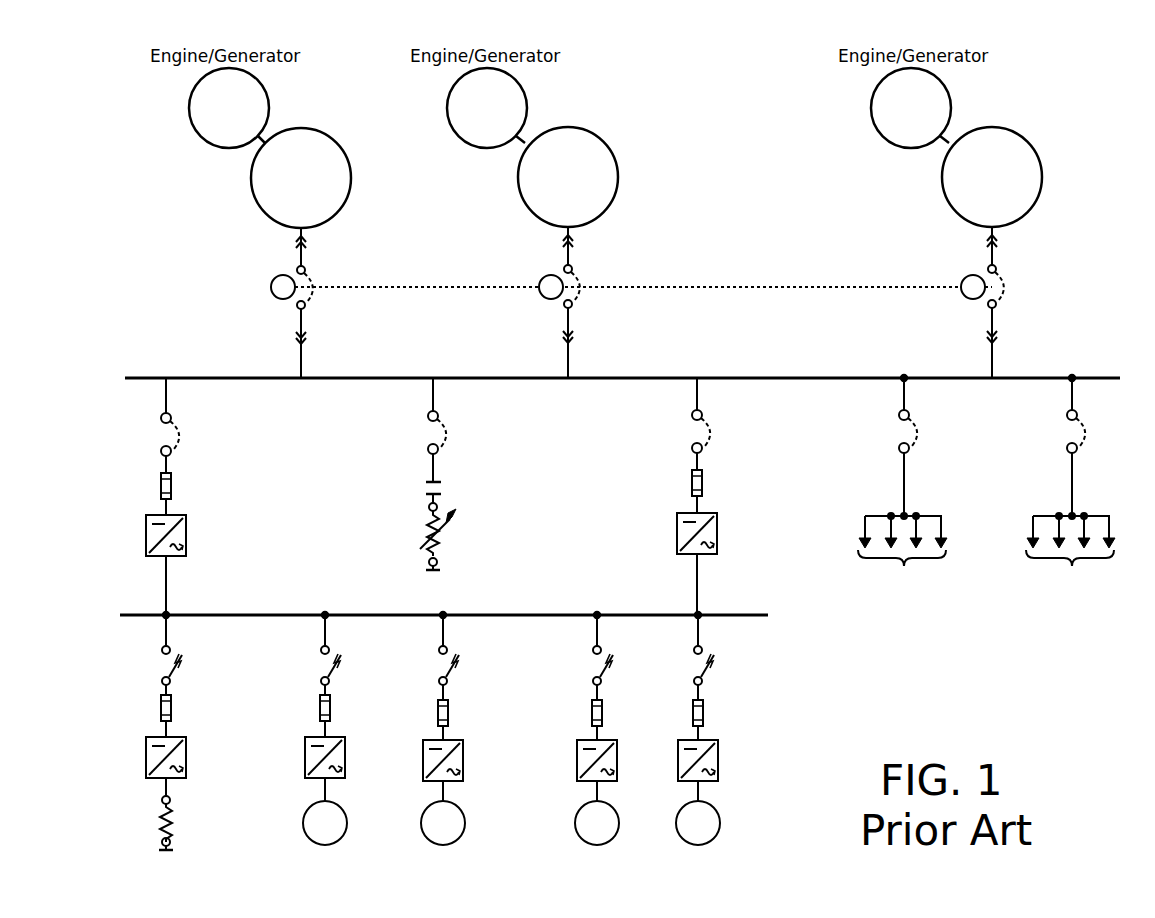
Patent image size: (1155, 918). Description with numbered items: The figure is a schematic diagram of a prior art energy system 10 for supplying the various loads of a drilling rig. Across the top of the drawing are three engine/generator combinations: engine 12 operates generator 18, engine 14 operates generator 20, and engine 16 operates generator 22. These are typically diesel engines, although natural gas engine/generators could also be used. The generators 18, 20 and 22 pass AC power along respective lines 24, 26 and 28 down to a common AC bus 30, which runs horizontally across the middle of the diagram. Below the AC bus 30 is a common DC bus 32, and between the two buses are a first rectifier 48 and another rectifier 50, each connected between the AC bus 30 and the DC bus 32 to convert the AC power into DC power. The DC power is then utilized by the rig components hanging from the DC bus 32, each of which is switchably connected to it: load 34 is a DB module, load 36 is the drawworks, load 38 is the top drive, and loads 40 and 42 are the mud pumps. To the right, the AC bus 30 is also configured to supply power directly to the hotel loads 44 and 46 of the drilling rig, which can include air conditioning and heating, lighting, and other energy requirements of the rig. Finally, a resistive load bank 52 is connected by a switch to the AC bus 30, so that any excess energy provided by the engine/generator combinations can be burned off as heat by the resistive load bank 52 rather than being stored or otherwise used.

The energy system 10 is at (818, 680).
The engine 12 is at (217, 147).
The engine 14 is at (478, 148).
The engine 16 is at (888, 146).
The generator 18 is at (338, 212).
The generator 20 is at (606, 209).
The generator 22 is at (953, 208).
The line 24 is at (300, 366).
The line 26 is at (570, 366).
The line 28 is at (990, 360).
The common AC bus 30 is at (480, 378).
The common DC bus 32 is at (495, 613).
The DB module 34 is at (177, 822).
The drawworks 36 is at (343, 813).
The top drive 38 is at (462, 813).
The mud pump 40 is at (616, 810).
The mud pump 42 is at (717, 810).
The hotel load 44 is at (866, 522).
The hotel load 46 is at (1041, 518).
The first rectifier 48 is at (187, 533).
The rectifier 50 is at (718, 535).
The resistive load bank 52 is at (447, 539).